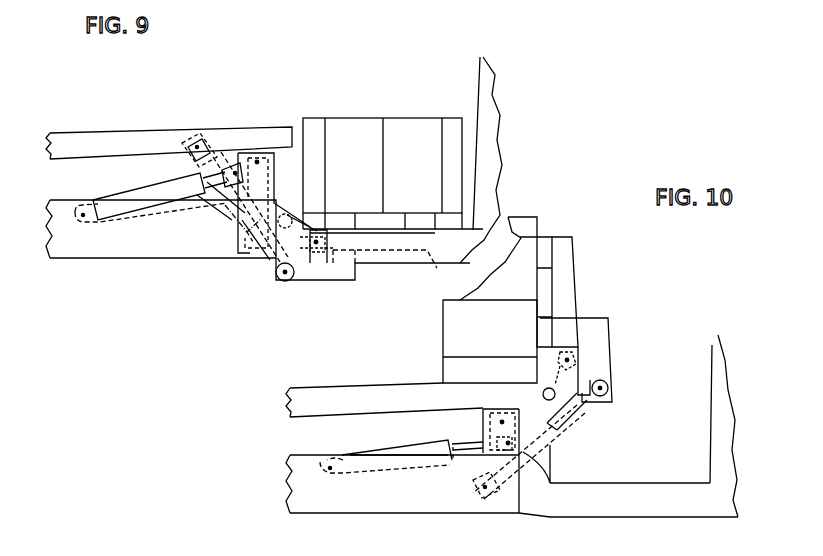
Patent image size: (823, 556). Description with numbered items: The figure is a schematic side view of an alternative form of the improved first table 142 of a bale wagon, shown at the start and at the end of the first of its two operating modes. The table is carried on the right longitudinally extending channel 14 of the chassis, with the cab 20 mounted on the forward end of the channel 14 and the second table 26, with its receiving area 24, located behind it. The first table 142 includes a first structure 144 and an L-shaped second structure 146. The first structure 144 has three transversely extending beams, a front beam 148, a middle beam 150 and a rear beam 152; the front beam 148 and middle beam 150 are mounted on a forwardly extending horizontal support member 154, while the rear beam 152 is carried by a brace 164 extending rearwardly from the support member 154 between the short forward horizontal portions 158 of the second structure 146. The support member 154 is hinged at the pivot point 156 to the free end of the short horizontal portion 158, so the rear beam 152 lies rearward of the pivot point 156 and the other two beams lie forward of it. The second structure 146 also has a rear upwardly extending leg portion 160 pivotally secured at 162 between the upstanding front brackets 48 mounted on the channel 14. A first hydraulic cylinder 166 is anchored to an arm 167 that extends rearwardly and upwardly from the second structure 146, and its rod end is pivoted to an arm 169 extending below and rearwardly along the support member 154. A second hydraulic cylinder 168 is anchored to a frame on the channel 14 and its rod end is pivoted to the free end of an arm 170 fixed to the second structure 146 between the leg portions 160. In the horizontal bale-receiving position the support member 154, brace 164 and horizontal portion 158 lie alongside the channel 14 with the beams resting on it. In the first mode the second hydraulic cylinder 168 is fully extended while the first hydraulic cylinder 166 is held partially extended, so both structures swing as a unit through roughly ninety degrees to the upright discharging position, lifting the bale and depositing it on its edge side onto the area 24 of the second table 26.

In FIG. 9, the longitudinally extending channel 14 is at (94, 257).
In FIG. 10, the longitudinally extending channel 14 is at (415, 510).
In FIG. 9, the cab 20 is at (478, 95).
In FIG. 10, the cab 20 is at (714, 362).
In FIG. 9, the area of the second table 24 is at (152, 130).
In FIG. 10, the area of the second table 24 is at (328, 386).
In FIG. 9, the second table 26 is at (106, 143).
In FIG. 10, the second table 26 is at (303, 398).
In FIG. 9, the upstanding front bracket 48 is at (278, 200).
In FIG. 10, the upstanding front bracket 48 is at (483, 410).
In FIG. 9, the first table 142 is at (389, 108).
In FIG. 9, the first structure 144 is at (380, 256).
In FIG. 10, the first structure 144 is at (580, 288).
In FIG. 9, the second structure 146 is at (247, 243).
In FIG. 10, the second structure 146 is at (577, 432).
In FIG. 9, the front beam 148 is at (433, 229).
In FIG. 9, the middle beam 150 is at (358, 217).
In FIG. 9, the rear beam 152 is at (290, 220).
In FIG. 9, the horizontal support member 154 is at (426, 253).
In FIG. 9, the pivot point 156 is at (318, 256).
In FIG. 10, the pivot point 156 is at (574, 359).
In FIG. 9, the short forward horizontal portion 158 is at (263, 262).
In FIG. 10, the short forward horizontal portion 158 is at (582, 418).
In FIG. 9, the rear upwardly-extending leg portion 160 is at (248, 157).
In FIG. 10, the rear upwardly-extending leg portion 160 is at (544, 395).
In FIG. 9, the pivot 162 is at (257, 163).
In FIG. 10, the pivot 162 is at (502, 422).
In FIG. 9, the brace 164 is at (307, 227).
In FIG. 10, the brace 164 is at (553, 378).
In FIG. 9, the first hydraulic cylinder 166 is at (225, 205).
In FIG. 10, the first hydraulic cylinder 166 is at (550, 481).
In FIG. 9, the arm 167 is at (193, 135).
In FIG. 10, the arm 167 is at (476, 470).
In FIG. 9, the second hydraulic cylinder 168 is at (130, 218).
In FIG. 10, the second hydraulic cylinder 168 is at (390, 473).
In FIG. 9, the arm 169 is at (343, 281).
In FIG. 10, the arm 169 is at (612, 366).
In FIG. 9, the arm 170 is at (237, 157).
In FIG. 10, the arm 170 is at (500, 436).